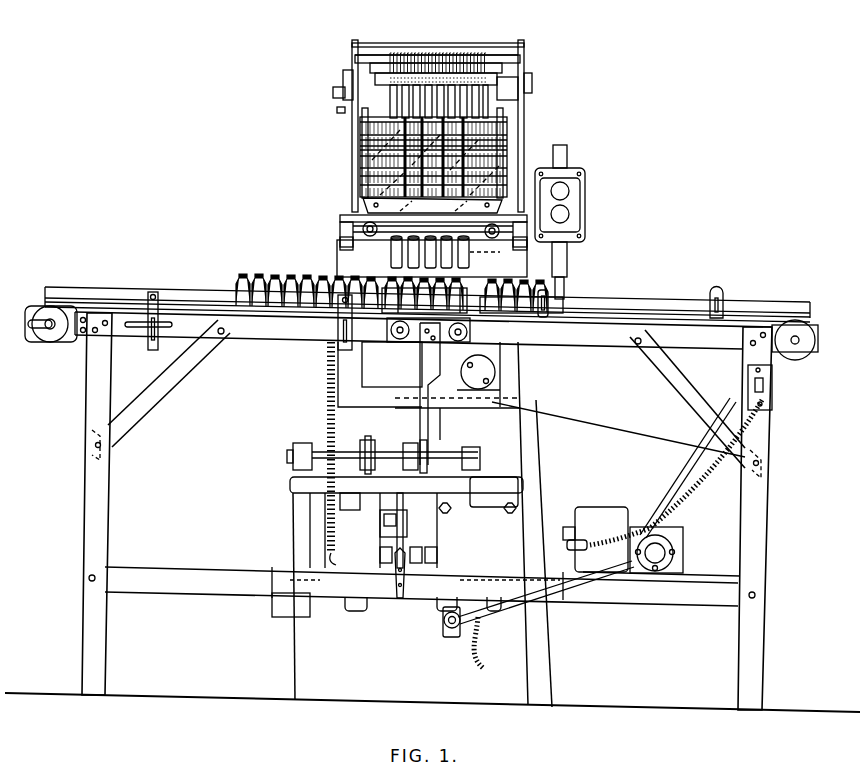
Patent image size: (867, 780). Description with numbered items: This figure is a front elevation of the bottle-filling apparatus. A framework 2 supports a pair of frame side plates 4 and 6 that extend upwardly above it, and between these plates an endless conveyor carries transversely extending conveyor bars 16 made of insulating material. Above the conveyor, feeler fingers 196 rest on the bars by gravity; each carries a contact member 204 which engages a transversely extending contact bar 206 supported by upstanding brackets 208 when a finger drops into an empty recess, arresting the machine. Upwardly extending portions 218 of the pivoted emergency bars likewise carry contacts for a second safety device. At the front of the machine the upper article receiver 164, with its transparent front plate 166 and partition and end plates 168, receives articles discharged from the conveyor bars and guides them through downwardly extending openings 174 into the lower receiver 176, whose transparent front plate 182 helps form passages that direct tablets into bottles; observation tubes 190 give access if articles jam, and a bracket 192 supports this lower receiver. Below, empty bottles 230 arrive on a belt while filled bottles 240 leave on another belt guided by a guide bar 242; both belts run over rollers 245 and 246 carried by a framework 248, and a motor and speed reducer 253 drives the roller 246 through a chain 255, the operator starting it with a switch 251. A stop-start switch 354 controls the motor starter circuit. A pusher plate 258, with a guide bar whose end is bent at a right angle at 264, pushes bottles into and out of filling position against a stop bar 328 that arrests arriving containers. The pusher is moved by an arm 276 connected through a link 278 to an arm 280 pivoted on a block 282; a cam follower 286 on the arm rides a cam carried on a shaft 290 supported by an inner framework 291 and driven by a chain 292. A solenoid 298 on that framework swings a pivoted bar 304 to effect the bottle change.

The framework 2 is at (348, 372).
The frame side plate 4 is at (378, 142).
The frame side plate 6 is at (568, 147).
The conveyor bars 16 is at (497, 136).
The upper article receiver 164 is at (295, 148).
The transversely extending plate 166 is at (492, 122).
The partition plates and end plates 168 is at (380, 147).
The downwardly extending openings 174 is at (383, 168).
The lower receiver 176 is at (296, 245).
The front plate 182 is at (372, 212).
The observation tubes 190 is at (380, 254).
The bracket 192 is at (341, 228).
The feeler fingers 196 is at (305, 82).
The contact member 204 is at (440, 65).
The contact bar 206 is at (502, 47).
The upstanding brackets 208 is at (522, 63).
The upwardly extending portions 218 is at (490, 117).
The bottles 230 is at (244, 278).
The bottles 240 is at (565, 300).
The guide bar 242 is at (662, 306).
The roller 245 is at (60, 344).
The roller 246 is at (793, 324).
The framework 248 is at (258, 338).
The switch 251 is at (778, 396).
The motor and speed reducer 253 is at (606, 510).
The chain 255 is at (680, 478).
The plate 258 is at (468, 325).
The right-angle end of bar 264 is at (392, 364).
The arm 276 is at (426, 368).
The link 278 is at (500, 408).
The arm 280 is at (424, 440).
The block 282 is at (453, 608).
The cam follower 286 is at (422, 455).
The shaft 290 is at (325, 452).
The framework 291 is at (298, 488).
The chain 292 is at (367, 440).
The solenoid 298 is at (381, 510).
The bar 304 is at (402, 500).
The stop bar 328 is at (500, 325).
The stop-start switch 354 is at (575, 190).